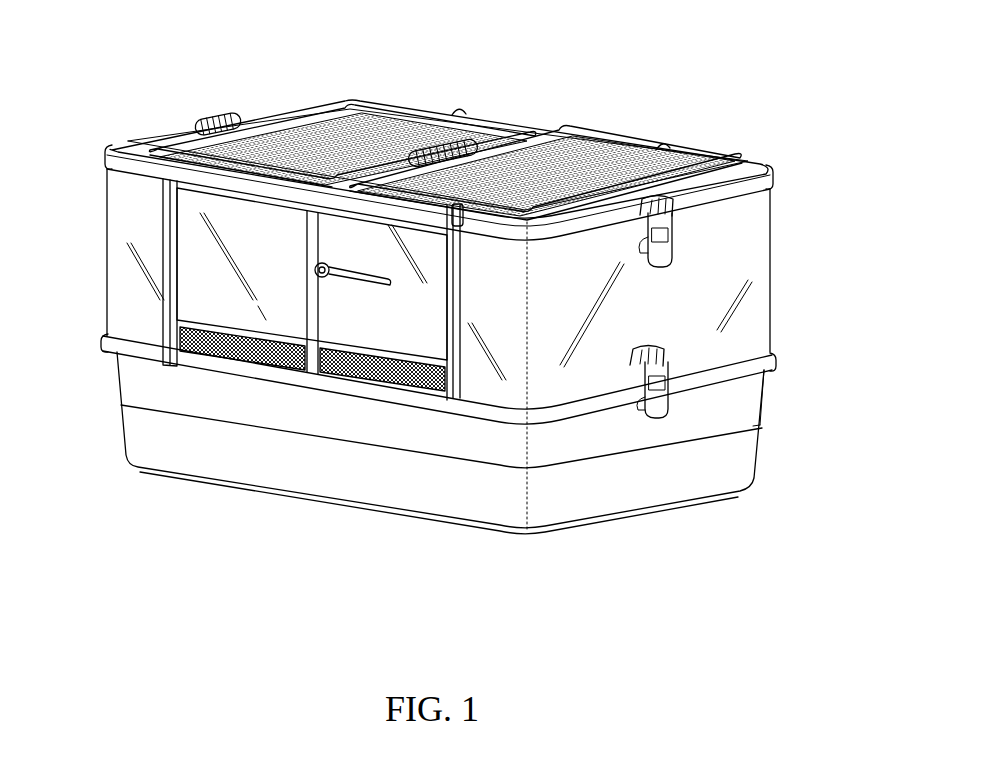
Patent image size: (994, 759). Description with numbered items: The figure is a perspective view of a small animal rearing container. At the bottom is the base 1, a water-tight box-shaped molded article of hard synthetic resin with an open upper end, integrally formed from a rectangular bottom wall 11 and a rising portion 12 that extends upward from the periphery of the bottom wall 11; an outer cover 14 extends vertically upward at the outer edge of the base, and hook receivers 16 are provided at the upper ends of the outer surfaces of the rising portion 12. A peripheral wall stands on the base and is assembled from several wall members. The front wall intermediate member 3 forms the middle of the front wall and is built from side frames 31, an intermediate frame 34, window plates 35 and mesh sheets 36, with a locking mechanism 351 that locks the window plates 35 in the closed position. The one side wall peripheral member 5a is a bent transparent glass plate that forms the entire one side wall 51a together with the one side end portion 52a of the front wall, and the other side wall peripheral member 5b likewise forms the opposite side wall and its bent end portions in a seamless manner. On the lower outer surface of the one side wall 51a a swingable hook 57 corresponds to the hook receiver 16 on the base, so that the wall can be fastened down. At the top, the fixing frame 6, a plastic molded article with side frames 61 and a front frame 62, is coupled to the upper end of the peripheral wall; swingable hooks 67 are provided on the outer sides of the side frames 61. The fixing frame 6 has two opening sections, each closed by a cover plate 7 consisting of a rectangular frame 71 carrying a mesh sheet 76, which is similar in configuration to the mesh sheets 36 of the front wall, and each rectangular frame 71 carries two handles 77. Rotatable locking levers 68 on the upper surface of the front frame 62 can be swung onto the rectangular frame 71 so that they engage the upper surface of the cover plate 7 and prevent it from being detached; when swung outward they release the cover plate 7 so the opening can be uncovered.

The base 1 is at (432, 457).
The front wall intermediate member 3 is at (251, 281).
The one side wall peripheral member 5a is at (683, 353).
The other side wall peripheral member 5b is at (108, 272).
The fixing frame 6 is at (577, 130).
The cover plate 7 is at (445, 127).
The bottom wall 11 is at (365, 510).
The rising portion 12 is at (260, 457).
The outer cover 14 is at (220, 362).
The hook receiver 16 is at (640, 400).
The side frame 31 is at (173, 263).
The intermediate frame 34 is at (273, 333).
The window plate 35 is at (193, 232).
The mesh sheet 36 is at (357, 372).
The one side wall 51a is at (743, 318).
The one side end portion of the front wall 52a is at (483, 378).
The hook 57 is at (645, 380).
The side frame 61 is at (147, 137).
The front frame 62 is at (520, 123).
The hook 67 is at (672, 230).
The locking lever 68 is at (461, 112).
The rectangular frame 71 is at (370, 103).
The mesh sheet 76 is at (323, 107).
The handle 77 is at (223, 113).
The locking mechanism 351 is at (330, 264).